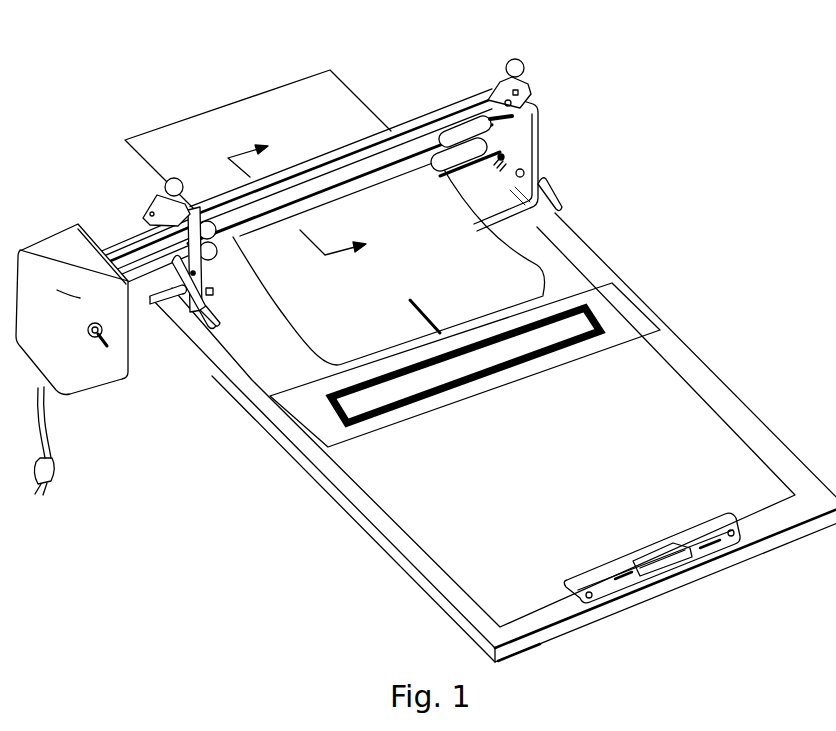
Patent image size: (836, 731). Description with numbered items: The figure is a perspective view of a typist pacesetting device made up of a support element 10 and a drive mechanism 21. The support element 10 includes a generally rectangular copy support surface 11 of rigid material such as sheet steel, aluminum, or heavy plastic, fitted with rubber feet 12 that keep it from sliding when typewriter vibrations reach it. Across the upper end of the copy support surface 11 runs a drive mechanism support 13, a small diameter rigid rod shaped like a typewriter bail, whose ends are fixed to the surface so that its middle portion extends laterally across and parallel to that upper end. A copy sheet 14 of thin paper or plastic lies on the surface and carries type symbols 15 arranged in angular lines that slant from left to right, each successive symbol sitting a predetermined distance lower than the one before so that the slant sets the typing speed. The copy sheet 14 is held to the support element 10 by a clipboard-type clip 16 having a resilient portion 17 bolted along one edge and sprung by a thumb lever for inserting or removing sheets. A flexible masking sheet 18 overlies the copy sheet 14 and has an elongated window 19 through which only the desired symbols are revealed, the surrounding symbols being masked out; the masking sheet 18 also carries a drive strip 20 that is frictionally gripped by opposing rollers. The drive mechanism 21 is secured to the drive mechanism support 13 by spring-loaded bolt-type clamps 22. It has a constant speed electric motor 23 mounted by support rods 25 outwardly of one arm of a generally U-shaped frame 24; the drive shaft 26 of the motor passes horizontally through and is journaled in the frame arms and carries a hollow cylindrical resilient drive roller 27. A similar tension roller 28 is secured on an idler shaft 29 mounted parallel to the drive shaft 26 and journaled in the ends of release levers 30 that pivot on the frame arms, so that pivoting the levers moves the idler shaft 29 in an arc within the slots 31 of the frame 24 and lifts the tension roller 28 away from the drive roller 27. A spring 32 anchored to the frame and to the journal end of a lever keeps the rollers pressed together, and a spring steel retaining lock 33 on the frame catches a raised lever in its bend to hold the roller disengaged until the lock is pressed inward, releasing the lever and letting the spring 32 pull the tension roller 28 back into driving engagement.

The support element 10 is at (426, 338).
The copy support surface 11 is at (696, 336).
The rubber feet 12 is at (455, 619).
The drive mechanism support 13 is at (400, 133).
The copy sheet 14 is at (735, 448).
The type symbols 15 is at (433, 478).
The clip 16 is at (663, 557).
The resilient portion 17 is at (615, 580).
The masking sheet 18 is at (620, 310).
The window 19 is at (568, 326).
The drive strip 20 is at (340, 97).
The drive mechanism 21 is at (148, 203).
The clamps 22 is at (166, 193).
The electric motor 23 is at (105, 367).
The frame 24 is at (538, 106).
The support rods 25 is at (118, 246).
The drive shaft 26 is at (128, 252).
The drive roller 27 is at (443, 143).
The tension roller 28 is at (466, 157).
The idler shaft 29 is at (510, 140).
The release levers 30 is at (548, 189).
The slots 31 is at (152, 300).
The spring 32 is at (203, 270).
The retaining lock 33 is at (212, 298).